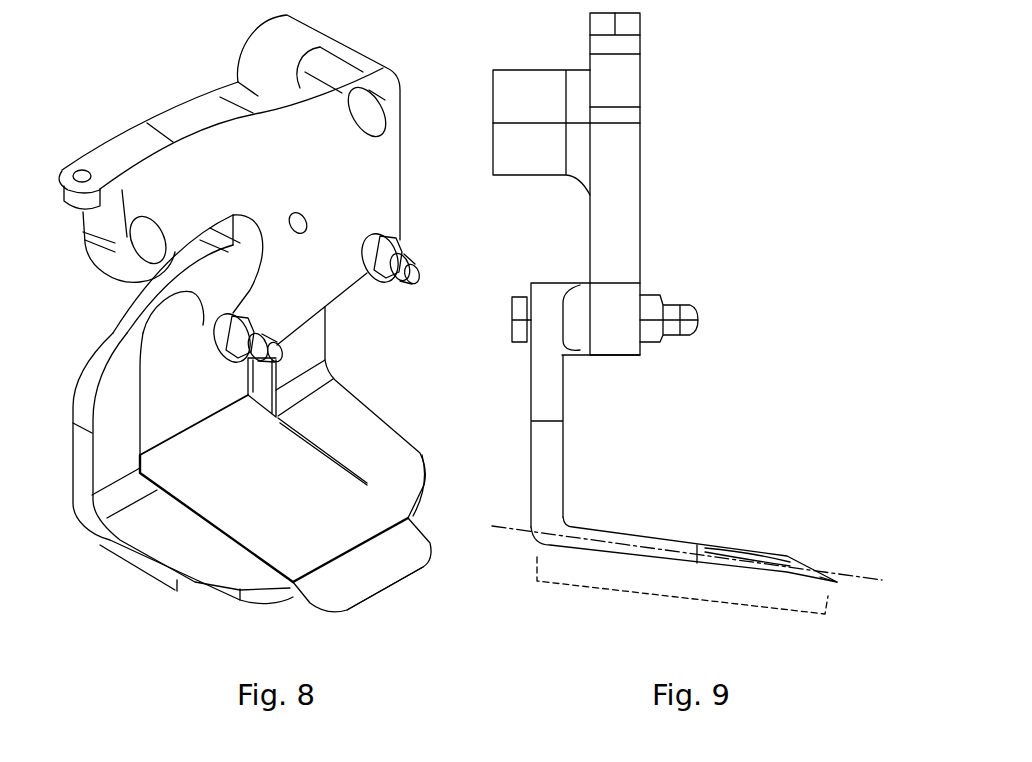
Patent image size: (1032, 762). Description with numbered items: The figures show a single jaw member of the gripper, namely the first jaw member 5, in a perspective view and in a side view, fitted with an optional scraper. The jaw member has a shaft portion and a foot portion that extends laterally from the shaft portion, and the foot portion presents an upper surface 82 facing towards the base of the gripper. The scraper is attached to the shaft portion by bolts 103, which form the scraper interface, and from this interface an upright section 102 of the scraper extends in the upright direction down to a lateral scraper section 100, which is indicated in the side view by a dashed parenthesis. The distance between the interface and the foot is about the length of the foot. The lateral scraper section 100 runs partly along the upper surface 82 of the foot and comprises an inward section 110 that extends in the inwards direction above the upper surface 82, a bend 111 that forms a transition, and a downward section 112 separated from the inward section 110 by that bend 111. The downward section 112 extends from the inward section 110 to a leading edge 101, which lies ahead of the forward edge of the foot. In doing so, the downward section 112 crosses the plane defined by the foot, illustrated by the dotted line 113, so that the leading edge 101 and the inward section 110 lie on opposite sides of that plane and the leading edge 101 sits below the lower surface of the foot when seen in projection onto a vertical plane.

In FIG. 8, the first jaw member 5 is at (116, 75).
In FIG. 9, the first jaw member 5 is at (456, 72).
In FIG. 8, the upper surface 82 is at (175, 545).
In FIG. 9, the lateral scraper section 100 is at (678, 601).
In FIG. 8, the leading edge 101 is at (422, 566).
In FIG. 9, the leading edge 101 is at (837, 588).
In FIG. 8, the upright section 102 is at (180, 380).
In FIG. 9, the upright section 102 is at (530, 395).
In FIG. 8, the bolts 103 is at (273, 338).
In FIG. 9, the bolts 103 is at (672, 300).
In FIG. 8, the inward section 110 is at (300, 463).
In FIG. 8, the bend 111 is at (317, 560).
In FIG. 9, the bend 111 is at (786, 558).
In FIG. 8, the downward section 112 is at (365, 563).
In FIG. 9, the dotted line 113 is at (708, 553).